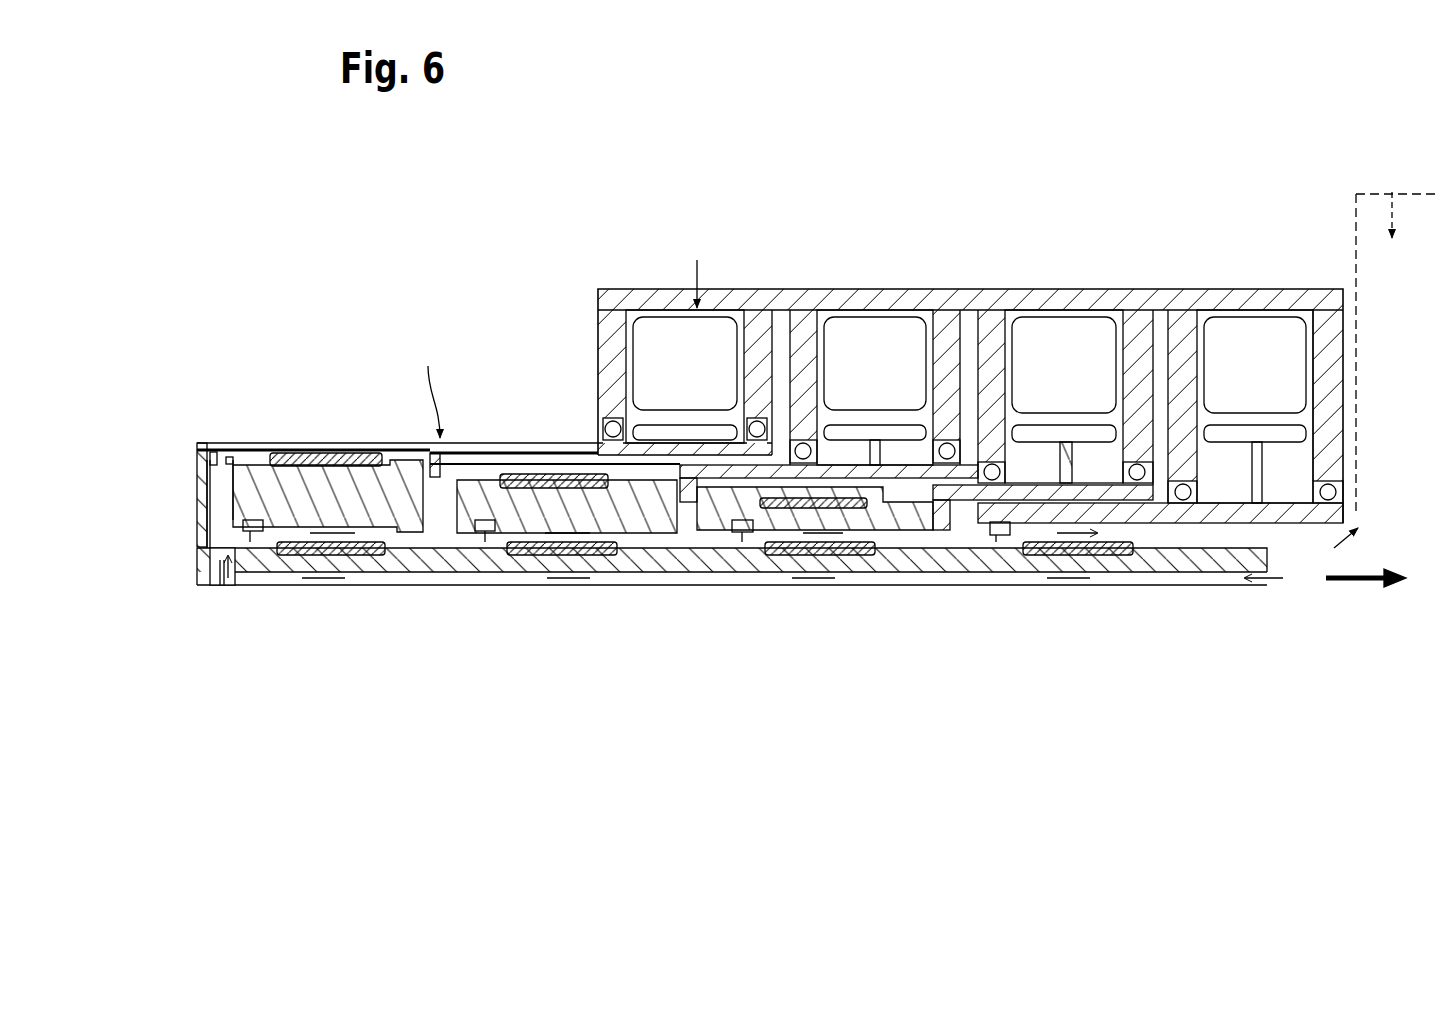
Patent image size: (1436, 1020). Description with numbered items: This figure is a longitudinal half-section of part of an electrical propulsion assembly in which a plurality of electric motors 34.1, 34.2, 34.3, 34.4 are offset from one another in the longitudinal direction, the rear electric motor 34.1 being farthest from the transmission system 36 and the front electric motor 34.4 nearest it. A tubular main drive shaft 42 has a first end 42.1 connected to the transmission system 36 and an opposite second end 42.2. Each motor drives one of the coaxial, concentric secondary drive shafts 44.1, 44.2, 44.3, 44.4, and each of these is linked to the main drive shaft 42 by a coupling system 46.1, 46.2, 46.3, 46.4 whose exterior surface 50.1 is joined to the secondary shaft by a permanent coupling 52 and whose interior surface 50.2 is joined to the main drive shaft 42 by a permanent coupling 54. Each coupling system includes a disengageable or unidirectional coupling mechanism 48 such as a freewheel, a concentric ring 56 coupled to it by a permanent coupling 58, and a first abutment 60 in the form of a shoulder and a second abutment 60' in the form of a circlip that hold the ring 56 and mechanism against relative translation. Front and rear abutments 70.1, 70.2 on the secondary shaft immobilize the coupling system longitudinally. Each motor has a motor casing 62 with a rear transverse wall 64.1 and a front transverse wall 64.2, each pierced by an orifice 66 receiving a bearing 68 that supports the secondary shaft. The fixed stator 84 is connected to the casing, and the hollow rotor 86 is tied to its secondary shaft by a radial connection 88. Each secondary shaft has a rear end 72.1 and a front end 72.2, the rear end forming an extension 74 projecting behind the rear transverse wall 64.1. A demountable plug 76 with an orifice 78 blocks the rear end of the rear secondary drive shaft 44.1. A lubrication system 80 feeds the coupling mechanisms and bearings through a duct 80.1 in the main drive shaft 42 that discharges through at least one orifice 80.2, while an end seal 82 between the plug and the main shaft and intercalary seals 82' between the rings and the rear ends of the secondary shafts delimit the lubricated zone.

The rear electric motor 34.1 is at (670, 303).
The electric motor 34.2 is at (873, 303).
The electric motor 34.3 is at (1025, 303).
The front electric motor 34.4 is at (1230, 303).
The transmission system 36 is at (1392, 192).
The main drive shaft 42 is at (193, 560).
The first end 42.1 is at (1246, 594).
The second end 42.2 is at (200, 575).
The rear secondary drive shaft 44.1 is at (373, 440).
The secondary drive shaft 44.2 is at (493, 452).
The secondary drive shaft 44.3 is at (700, 466).
The front secondary drive shaft 44.4 is at (1299, 508).
The rear coupling system 46.1 is at (264, 490).
The coupling system 46.2 is at (563, 483).
The coupling system 46.3 is at (818, 480).
The front coupling system 46.4 is at (1040, 535).
The disengageable or unidirectional coupling mechanism 48 is at (352, 562).
The exterior surface 50.1 is at (252, 445).
The interior surface 50.2 is at (265, 552).
The permanent coupling 52 is at (305, 452).
The permanent coupling 54 is at (318, 555).
The ring 56 is at (335, 452).
The permanent coupling 58 is at (207, 500).
The first abutment 60 is at (375, 607).
The second abutment 60' is at (242, 609).
The motor casing 62 is at (1289, 285).
The rear transverse wall 64.1 is at (603, 340).
The front transverse wall 64.2 is at (748, 345).
The orifice 66 is at (1320, 481).
The bearing 68 is at (1338, 494).
The front abutment 70.1 is at (415, 445).
The rear abutment 70.2 is at (225, 447).
The rear end 72.1 is at (213, 447).
The front end 72.2 is at (1341, 526).
The extension 74 is at (1040, 608).
The plug 76 is at (192, 480).
The orifice 78 is at (202, 517).
The lubrication system 80 is at (1282, 595).
The duct 80.1 is at (565, 579).
The orifice 80.2 is at (222, 580).
The end seal 82 is at (167, 540).
The intercalary seal 82' is at (703, 579).
The stator 84 is at (650, 328).
The rotor 86 is at (612, 430).
The radial connection 88 is at (876, 440).